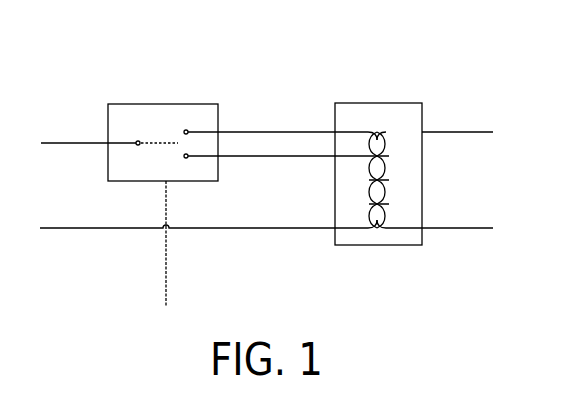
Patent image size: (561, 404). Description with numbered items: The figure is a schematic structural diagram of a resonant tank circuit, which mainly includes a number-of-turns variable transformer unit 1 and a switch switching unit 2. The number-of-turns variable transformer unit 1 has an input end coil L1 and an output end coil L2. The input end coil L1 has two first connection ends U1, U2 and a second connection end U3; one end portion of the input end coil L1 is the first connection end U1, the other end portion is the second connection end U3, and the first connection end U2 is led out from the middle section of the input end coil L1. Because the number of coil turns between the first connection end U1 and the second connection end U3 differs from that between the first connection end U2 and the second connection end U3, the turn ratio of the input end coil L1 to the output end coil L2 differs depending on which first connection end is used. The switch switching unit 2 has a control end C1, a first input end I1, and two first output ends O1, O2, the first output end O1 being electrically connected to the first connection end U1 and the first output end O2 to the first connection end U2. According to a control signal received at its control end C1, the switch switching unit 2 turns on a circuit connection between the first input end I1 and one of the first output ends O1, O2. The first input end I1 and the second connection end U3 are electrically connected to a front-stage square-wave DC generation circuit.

The number-of-turns variable transformer unit 1 is at (388, 103).
The switch switching unit 2 is at (167, 104).
The first input end I1 is at (90, 133).
The first output end O1 is at (259, 121).
The first output end O2 is at (259, 169).
The control end C1 is at (182, 244).
The first connection end U1 is at (398, 124).
The first connection end U2 is at (338, 171).
The second connection end U3 is at (266, 238).
The input end coil L1 is at (362, 170).
The output end coil L2 is at (391, 170).